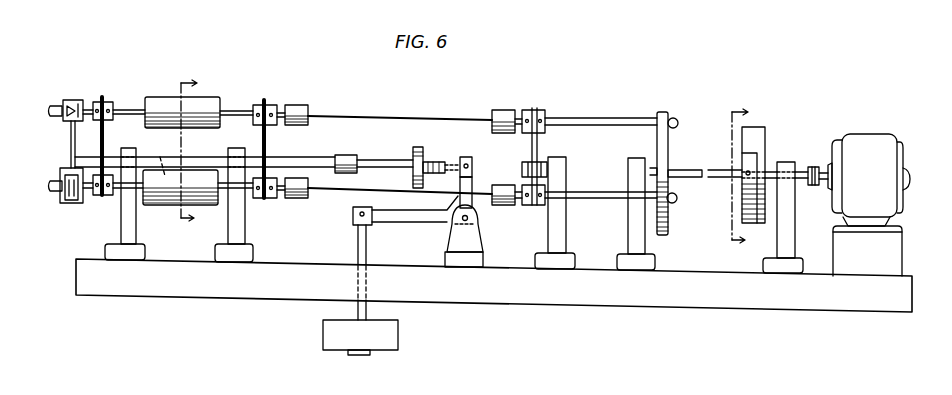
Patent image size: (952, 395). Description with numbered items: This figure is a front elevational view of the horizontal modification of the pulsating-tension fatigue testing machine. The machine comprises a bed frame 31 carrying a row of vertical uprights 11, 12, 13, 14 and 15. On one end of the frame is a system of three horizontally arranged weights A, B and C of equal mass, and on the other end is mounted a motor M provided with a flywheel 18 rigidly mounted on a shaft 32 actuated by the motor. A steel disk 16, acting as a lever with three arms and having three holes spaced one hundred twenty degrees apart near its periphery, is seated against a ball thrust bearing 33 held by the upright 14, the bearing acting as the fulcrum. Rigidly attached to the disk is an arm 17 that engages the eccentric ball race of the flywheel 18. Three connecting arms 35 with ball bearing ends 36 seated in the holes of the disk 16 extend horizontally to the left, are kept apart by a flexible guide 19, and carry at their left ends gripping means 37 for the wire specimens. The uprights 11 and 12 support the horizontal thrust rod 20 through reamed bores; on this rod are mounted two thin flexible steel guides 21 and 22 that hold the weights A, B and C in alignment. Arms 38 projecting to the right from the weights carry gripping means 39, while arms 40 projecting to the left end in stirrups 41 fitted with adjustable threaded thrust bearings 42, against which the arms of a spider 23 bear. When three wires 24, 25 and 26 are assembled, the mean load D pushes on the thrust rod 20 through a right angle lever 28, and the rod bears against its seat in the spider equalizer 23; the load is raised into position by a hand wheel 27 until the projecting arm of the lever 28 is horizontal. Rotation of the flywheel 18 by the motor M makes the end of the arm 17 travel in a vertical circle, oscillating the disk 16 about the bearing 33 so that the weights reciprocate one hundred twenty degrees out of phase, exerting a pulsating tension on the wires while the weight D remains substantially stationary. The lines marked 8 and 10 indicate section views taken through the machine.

The section line 8- 8 is at (196, 151).
The section line 10- 10 is at (753, 176).
The vertical upright 11 is at (115, 247).
The vertical upright 12 is at (218, 250).
The vertical upright 13 is at (473, 241).
The vertical upright 14 is at (650, 258).
The vertical upright 15 is at (790, 235).
The steel disk 16 is at (657, 113).
The arm 17 is at (714, 171).
The flywheel 18 is at (758, 139).
The flexible guide 19 is at (536, 110).
The horizontal thrust rod 20 is at (293, 161).
The flexible steel guide 21 is at (101, 102).
The flexible steel guide 22 is at (263, 105).
The spider 23 is at (71, 145).
The wire specimen 24 is at (372, 116).
The wire specimen 25 is at (323, 195).
The wire specimen 26 is at (350, 193).
The hand wheel 27 is at (419, 155).
The right angle lever 28 is at (418, 219).
The bed frame 31 is at (900, 288).
The shaft 32 is at (768, 171).
The ball thrust bearing 33 is at (655, 171).
The connecting arm 35 is at (584, 119).
The ball bearing end 36 is at (678, 120).
The gripping means 37 is at (502, 111).
The projecting arm 38 is at (234, 111).
The gripping means 39 is at (306, 107).
The arm 40 is at (133, 110).
The stirrup 41 is at (67, 101).
The adjustable threaded thrust bearing 42 is at (52, 106).
The reciprocating weight A is at (172, 99).
The reciprocating weight B is at (157, 203).
The reciprocating weight C is at (158, 157).
The mean load D is at (393, 335).
The motor M is at (878, 141).